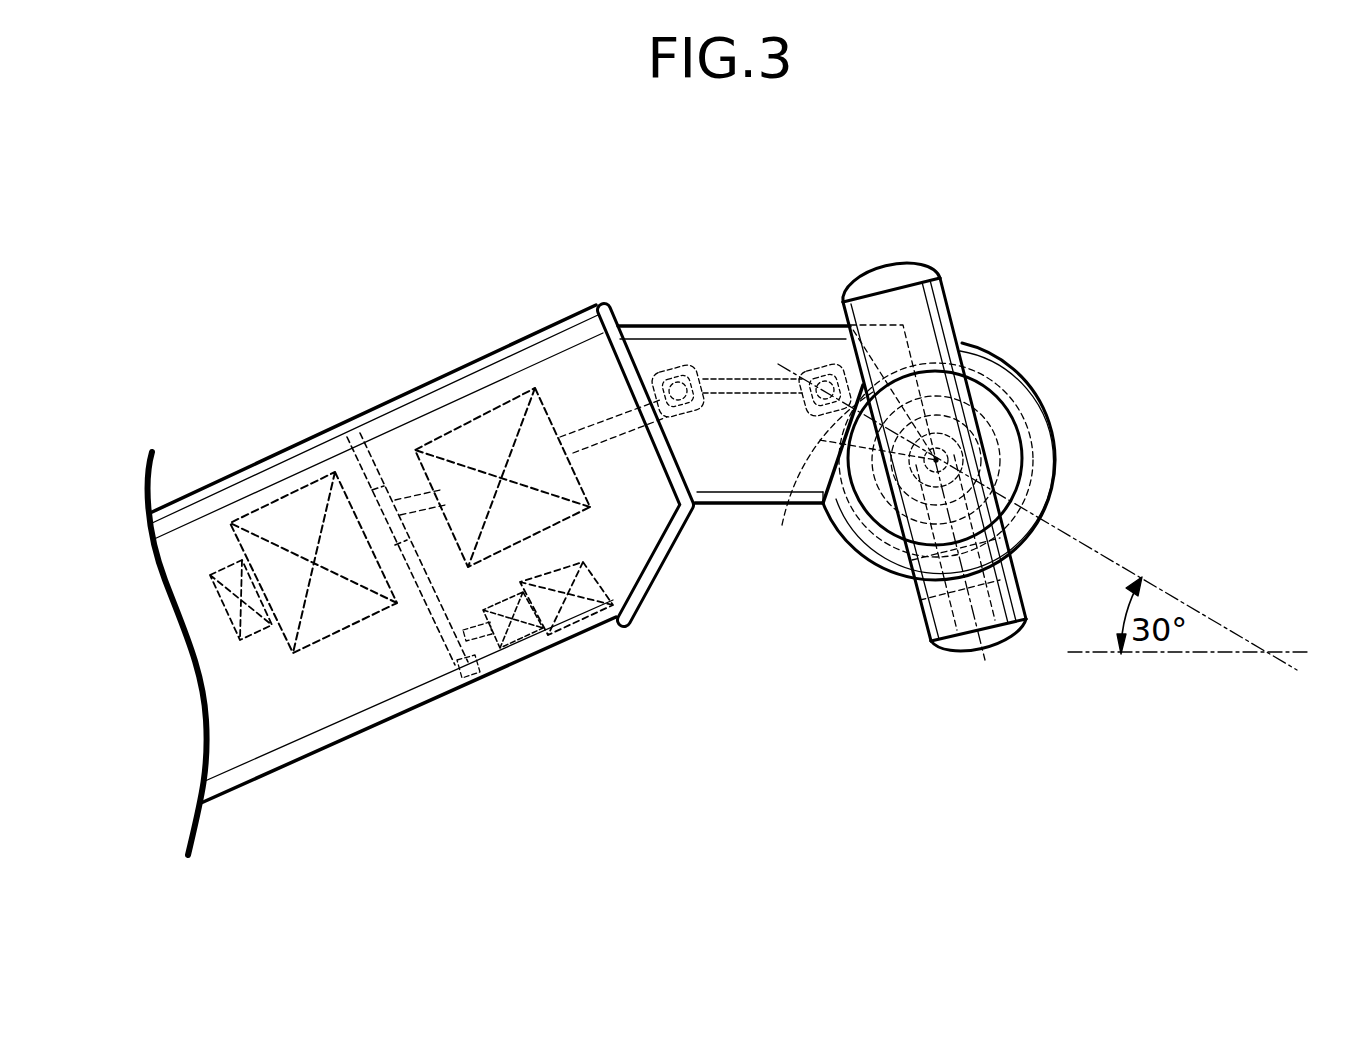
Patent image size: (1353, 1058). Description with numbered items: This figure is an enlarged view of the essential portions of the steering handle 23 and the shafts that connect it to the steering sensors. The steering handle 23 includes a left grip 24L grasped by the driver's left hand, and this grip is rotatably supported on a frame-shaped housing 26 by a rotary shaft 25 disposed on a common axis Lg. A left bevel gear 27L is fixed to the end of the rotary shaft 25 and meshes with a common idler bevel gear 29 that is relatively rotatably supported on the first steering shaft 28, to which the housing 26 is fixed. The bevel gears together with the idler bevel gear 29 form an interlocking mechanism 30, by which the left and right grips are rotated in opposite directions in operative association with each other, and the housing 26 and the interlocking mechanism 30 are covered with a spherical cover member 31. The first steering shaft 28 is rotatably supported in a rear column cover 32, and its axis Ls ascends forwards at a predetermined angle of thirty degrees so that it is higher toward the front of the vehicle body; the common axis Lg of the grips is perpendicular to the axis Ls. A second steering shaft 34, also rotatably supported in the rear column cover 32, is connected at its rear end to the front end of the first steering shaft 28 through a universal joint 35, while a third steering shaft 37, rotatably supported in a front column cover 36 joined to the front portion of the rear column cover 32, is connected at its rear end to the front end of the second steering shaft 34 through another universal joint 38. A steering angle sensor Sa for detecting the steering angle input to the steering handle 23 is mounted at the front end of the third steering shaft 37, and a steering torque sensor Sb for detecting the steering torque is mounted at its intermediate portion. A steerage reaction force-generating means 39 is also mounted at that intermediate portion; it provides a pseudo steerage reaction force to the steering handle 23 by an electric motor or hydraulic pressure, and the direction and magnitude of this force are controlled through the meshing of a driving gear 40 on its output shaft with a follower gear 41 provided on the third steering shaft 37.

The steering handle 23 is at (968, 290).
The left grip 24L is at (935, 598).
The rotary shaft 25 is at (860, 537).
The housing 26 is at (1062, 490).
The left bevel gear 27L is at (1008, 542).
The first steering shaft 28 is at (848, 478).
The idler bevel gear 29 is at (962, 352).
The interlocking mechanism 30 is at (960, 403).
The spherical cover member 31 is at (1062, 440).
The rear column cover 32 is at (740, 340).
The second steering shaft 34 is at (748, 396).
The universal joint 35 is at (818, 375).
The front column cover 36 is at (445, 398).
The third steering shaft 37 is at (582, 432).
The universal joint 38 is at (685, 378).
The steerage reaction force-generating means 39 is at (580, 635).
The driving gear 40 is at (462, 680).
The follower gear 41 is at (350, 425).
The steering angle sensor Sa is at (280, 508).
The steering torque sensor Sb is at (487, 418).
The common axis Lg is at (985, 660).
The axis Ls is at (1110, 565).